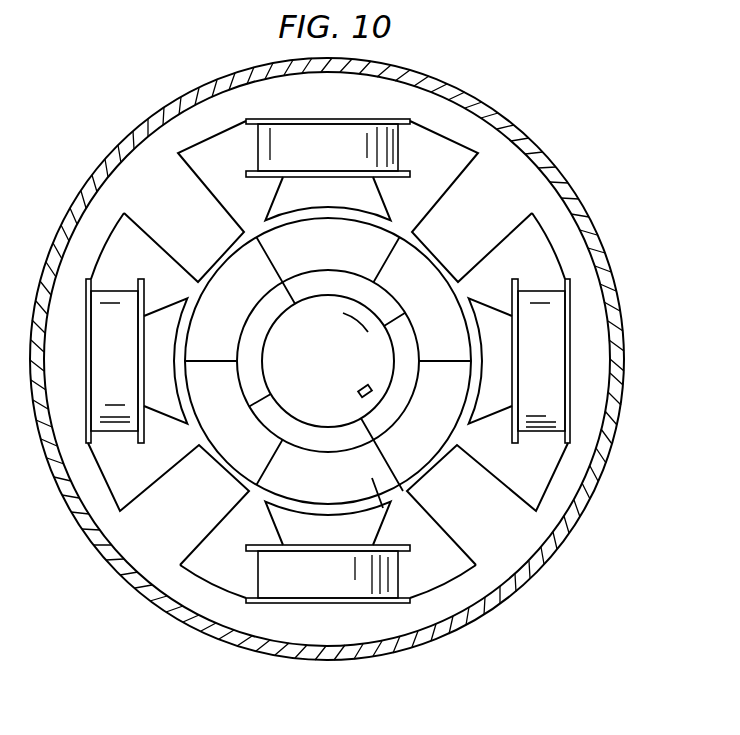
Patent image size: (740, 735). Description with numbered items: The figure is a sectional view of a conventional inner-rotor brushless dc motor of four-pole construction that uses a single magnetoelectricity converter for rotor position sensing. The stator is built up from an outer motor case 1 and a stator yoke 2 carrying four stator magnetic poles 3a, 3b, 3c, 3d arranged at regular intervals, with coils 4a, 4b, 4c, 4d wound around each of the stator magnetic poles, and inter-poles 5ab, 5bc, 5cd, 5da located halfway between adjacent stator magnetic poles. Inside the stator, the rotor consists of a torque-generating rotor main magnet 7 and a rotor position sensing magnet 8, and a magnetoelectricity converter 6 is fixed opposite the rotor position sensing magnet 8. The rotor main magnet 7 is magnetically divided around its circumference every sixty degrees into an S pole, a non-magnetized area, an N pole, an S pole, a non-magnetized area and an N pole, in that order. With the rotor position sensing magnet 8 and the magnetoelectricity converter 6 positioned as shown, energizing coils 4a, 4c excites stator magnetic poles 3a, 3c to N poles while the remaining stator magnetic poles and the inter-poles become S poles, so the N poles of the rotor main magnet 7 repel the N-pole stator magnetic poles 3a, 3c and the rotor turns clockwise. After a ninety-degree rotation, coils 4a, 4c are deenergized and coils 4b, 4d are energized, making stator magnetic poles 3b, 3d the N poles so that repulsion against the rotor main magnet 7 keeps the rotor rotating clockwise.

The motor case 1 is at (518, 128).
The stator yoke 2 is at (563, 237).
The stator magnetic pole 3a is at (490, 360).
The stator magnetic pole 3b is at (327, 523).
The stator magnetic pole 3c is at (165, 360).
The stator magnetic pole 3d is at (327, 198).
The coil 4a is at (541, 361).
The coil 4b is at (328, 574).
The coil 4c is at (115, 361).
The coil 4d is at (328, 148).
The inter-pole 5ab is at (487, 504).
The inter-pole 5bc is at (168, 504).
The inter-pole 5cd is at (185, 201).
The inter-pole 5da is at (471, 201).
The magnetoelectricity converter 6 is at (372, 398).
The rotor main magnet 7 is at (458, 580).
The rotor position sensing magnet 8 is at (338, 438).